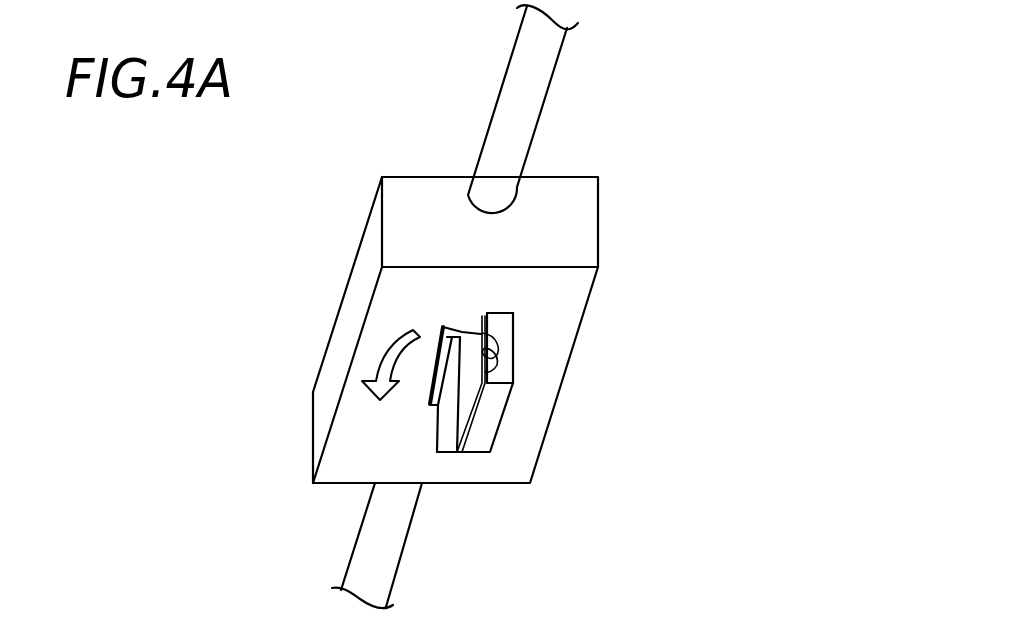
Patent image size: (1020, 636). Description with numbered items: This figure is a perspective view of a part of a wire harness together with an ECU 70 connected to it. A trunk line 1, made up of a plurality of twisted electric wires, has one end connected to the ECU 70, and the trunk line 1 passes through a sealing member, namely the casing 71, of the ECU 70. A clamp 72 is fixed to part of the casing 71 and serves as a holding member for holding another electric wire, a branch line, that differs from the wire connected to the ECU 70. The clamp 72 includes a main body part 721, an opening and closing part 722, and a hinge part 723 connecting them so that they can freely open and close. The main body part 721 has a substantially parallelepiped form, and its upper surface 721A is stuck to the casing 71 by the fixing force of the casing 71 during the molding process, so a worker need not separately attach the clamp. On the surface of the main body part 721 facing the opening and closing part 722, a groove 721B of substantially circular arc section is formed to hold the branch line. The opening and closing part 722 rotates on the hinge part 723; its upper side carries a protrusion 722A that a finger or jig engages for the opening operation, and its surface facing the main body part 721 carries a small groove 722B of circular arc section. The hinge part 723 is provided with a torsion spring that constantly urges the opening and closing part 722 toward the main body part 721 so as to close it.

The trunk line 1 is at (500, 91).
The ECU 70 is at (652, 157).
The casing 71 is at (576, 345).
The clamp 72 is at (419, 423).
The main body part 721 is at (589, 359).
The upper surface 721A is at (500, 309).
The groove 721B is at (498, 371).
The opening and closing part 722 is at (425, 396).
The protrusion 722A is at (426, 403).
The small groove 722B is at (485, 323).
The hinge part 723 is at (472, 414).